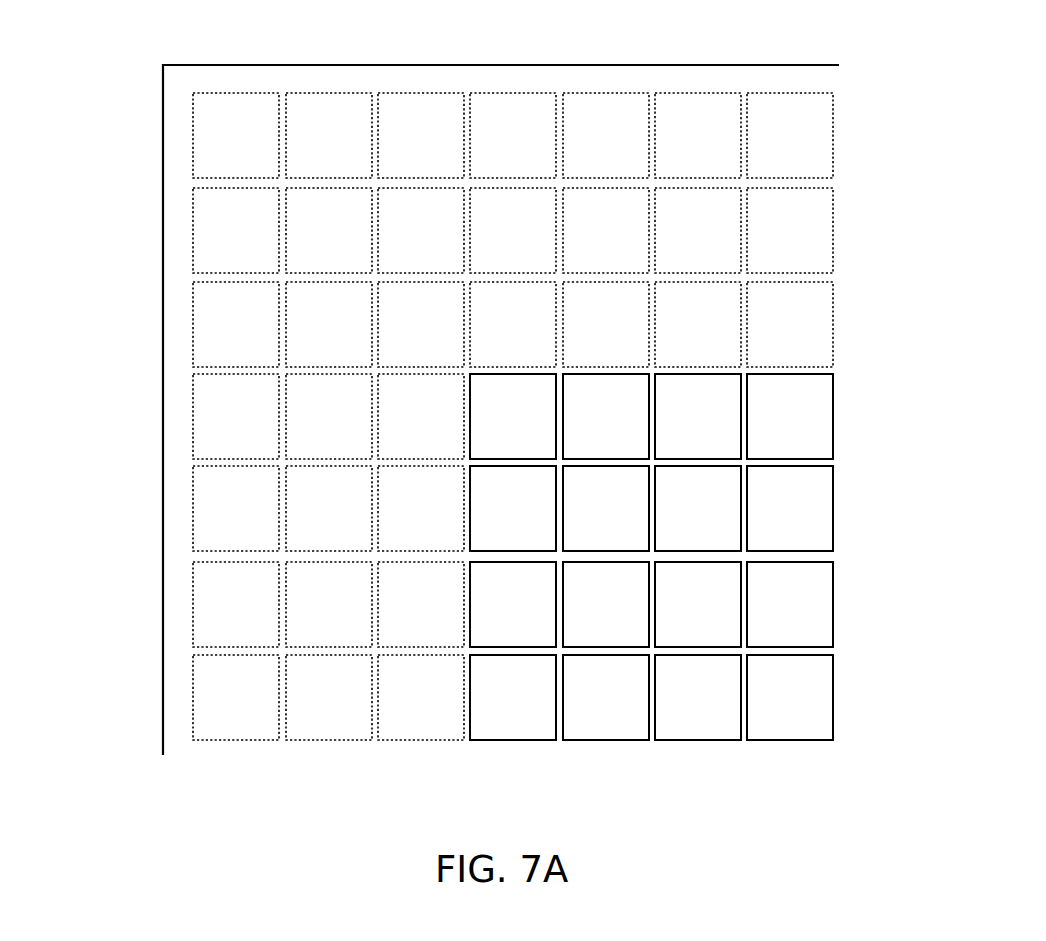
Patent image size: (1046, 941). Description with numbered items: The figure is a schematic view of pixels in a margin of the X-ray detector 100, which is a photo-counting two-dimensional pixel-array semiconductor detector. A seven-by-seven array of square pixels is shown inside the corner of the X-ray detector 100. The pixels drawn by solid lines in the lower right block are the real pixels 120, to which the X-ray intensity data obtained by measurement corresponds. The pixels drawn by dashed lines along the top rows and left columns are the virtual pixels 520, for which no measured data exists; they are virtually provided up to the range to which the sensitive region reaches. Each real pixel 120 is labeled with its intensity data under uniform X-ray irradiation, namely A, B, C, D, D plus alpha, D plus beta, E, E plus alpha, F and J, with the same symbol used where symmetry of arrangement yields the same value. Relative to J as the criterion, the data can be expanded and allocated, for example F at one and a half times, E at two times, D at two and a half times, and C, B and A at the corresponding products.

The X-ray detector 100 is at (163, 118).
The virtual pixels 520 is at (286, 93).
The real pixels 120 is at (835, 700).